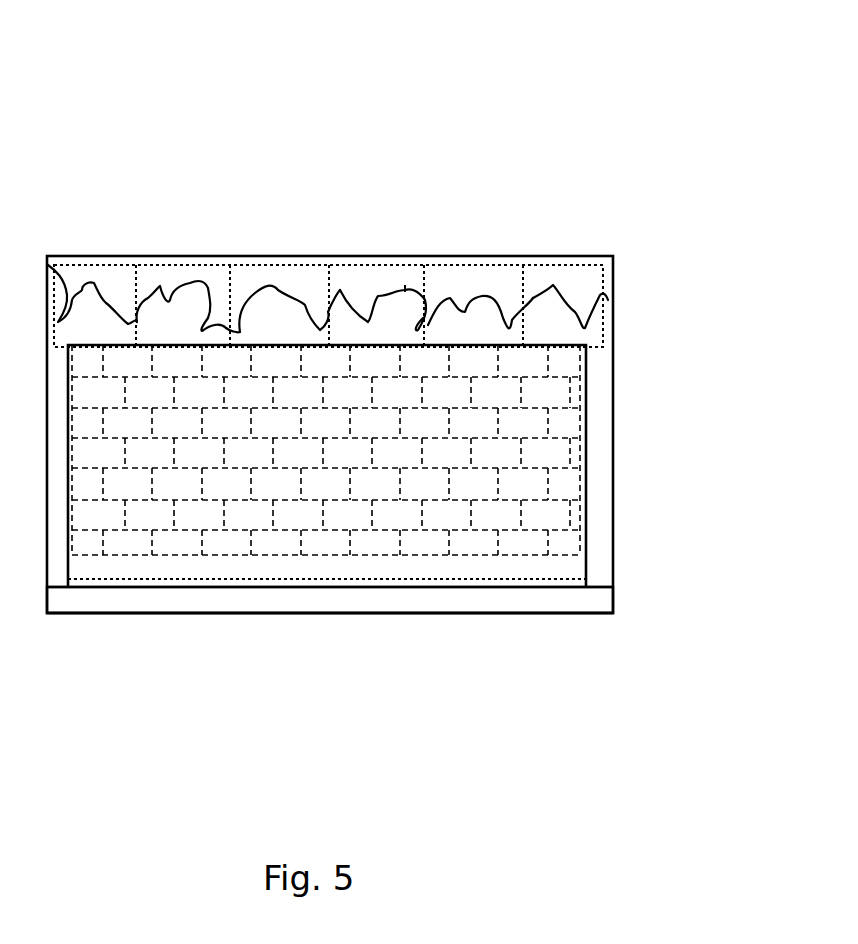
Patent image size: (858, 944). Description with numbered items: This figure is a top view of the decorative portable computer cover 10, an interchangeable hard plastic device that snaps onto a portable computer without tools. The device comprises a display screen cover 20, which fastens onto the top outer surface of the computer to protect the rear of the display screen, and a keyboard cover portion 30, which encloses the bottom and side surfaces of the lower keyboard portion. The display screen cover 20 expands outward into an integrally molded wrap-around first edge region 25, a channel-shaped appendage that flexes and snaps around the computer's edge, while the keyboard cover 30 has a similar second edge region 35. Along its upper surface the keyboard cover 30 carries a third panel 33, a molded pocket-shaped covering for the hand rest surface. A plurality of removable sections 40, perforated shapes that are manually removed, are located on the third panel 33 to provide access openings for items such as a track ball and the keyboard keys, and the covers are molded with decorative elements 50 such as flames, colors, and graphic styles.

The decorative portable computer cover 10 is at (760, 170).
The display screen cover 20 is at (462, 636).
The first edge region 25 is at (535, 612).
The keyboard cover portion 30 is at (470, 236).
The third panel 33 is at (602, 328).
The second edge region 35 is at (613, 558).
The removable sections 40 is at (382, 280).
The decorative elements 50 is at (405, 290).